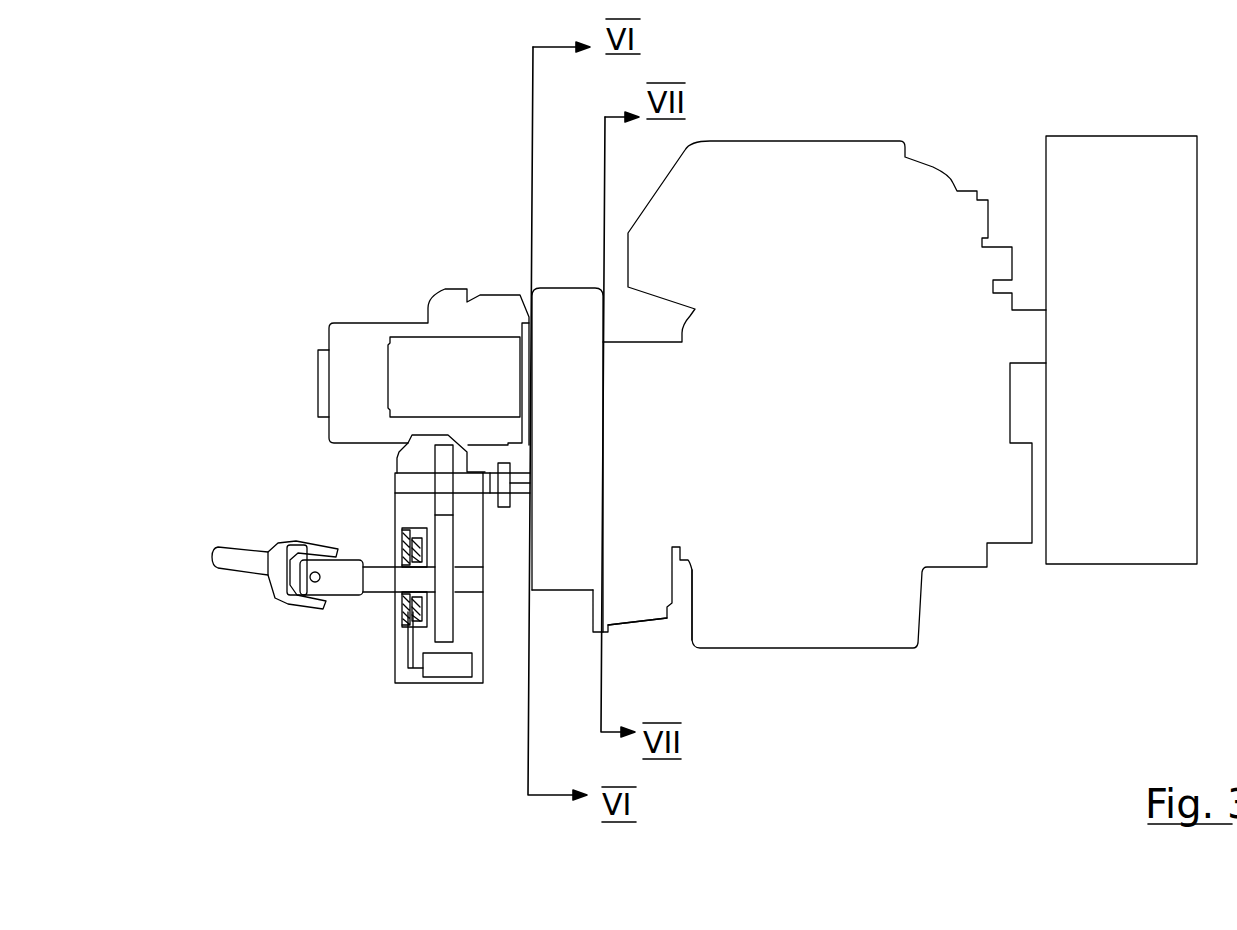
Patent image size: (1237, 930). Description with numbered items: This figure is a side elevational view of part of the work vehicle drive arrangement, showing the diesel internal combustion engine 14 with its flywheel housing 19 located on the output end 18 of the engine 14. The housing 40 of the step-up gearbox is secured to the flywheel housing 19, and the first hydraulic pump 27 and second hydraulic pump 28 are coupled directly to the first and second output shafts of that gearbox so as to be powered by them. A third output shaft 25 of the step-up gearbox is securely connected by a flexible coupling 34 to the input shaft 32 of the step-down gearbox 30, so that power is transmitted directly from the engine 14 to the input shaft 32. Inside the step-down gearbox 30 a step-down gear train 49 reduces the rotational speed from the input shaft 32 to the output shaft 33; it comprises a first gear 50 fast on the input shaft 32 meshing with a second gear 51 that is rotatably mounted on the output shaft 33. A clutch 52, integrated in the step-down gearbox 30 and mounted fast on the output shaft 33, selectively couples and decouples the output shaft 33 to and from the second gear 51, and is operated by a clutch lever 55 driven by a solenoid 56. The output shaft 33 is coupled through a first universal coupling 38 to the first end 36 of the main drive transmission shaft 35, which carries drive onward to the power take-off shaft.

The internal combustion engine 14 is at (808, 153).
The output end 18 is at (683, 593).
The flywheel housing 19 is at (638, 603).
The third output shaft 25 is at (523, 486).
The first hydraulic pump 27 is at (364, 342).
The second hydraulic pump 28 is at (425, 355).
The step-down gearbox 30 is at (486, 660).
The input shaft 32 is at (490, 480).
The output shaft 33 is at (373, 593).
The flexible coupling 34 is at (510, 470).
The main drive transmission shaft 35 is at (237, 560).
The first end 36 is at (268, 550).
The first universal coupling 38 is at (277, 585).
The housing 40 is at (560, 312).
The step-down gear train 49 is at (462, 603).
The first gear 50 is at (450, 460).
The second gear 51 is at (452, 535).
The clutch 52 is at (400, 535).
The clutch lever 55 is at (408, 638).
The solenoid 56 is at (447, 665).